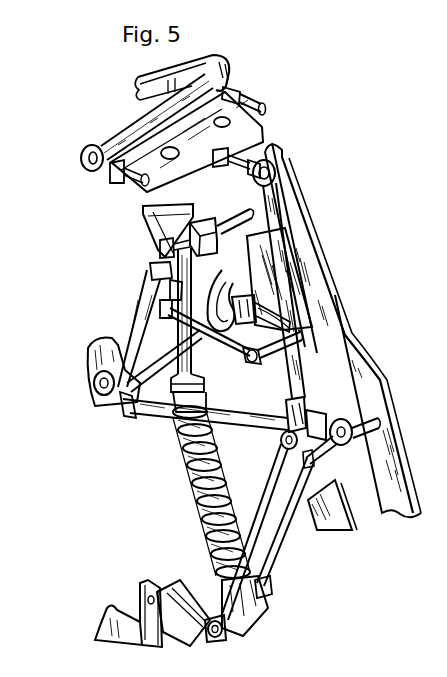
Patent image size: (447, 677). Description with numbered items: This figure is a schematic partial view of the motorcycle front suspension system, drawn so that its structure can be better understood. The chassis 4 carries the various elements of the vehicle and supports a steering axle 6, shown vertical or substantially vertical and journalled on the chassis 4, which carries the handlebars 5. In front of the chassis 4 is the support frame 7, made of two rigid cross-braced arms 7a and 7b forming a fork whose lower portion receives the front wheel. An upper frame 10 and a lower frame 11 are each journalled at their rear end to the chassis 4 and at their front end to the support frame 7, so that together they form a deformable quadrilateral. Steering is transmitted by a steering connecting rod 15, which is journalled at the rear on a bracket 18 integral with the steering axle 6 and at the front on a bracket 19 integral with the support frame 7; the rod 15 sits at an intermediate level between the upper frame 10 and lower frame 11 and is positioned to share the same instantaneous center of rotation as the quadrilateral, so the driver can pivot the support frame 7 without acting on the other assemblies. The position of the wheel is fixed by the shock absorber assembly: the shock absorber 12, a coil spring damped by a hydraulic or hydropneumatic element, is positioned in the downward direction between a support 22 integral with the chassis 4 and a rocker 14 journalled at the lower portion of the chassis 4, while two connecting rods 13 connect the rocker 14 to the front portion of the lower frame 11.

The chassis 4 is at (138, 100).
The handlebars 5 is at (236, 218).
The steering axle 6 is at (203, 260).
The support frame 7 is at (353, 310).
The rigid cross-braced arm 7a is at (296, 210).
The rigid cross-braced arm 7b is at (290, 273).
The upper frame 10 is at (250, 92).
The lower frame 11 is at (268, 397).
The shock absorber 12 is at (192, 478).
The connecting rods 13 is at (266, 540).
The rocker 14 is at (197, 591).
The steering connecting rod 15 is at (226, 354).
The bracket 18 is at (152, 287).
The bracket 19 is at (264, 380).
The support 22 is at (156, 420).